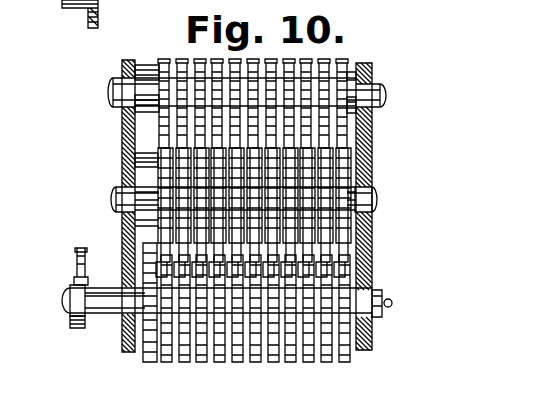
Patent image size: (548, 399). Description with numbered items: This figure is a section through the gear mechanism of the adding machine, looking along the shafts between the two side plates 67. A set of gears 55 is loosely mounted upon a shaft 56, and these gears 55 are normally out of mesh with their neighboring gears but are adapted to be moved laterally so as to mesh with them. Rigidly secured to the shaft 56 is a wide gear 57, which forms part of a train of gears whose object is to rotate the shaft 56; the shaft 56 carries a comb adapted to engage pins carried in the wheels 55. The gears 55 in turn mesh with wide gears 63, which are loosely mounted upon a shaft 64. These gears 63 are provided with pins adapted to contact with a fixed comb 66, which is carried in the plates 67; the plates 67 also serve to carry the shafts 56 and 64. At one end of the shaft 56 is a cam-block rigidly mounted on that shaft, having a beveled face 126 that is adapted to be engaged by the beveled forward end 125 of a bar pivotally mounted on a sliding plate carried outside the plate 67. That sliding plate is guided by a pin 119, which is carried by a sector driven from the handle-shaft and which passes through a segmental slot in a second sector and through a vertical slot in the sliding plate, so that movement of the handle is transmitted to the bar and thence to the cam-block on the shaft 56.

The pin 119 is at (113, 0).
The plates 67 is at (122, 121).
The fixed comb 66 is at (135, 159).
The shaft 64 is at (114, 199).
The wide gears 63 is at (374, 228).
The beveled face 126 is at (79, 268).
The beveled forward end 125 is at (75, 284).
The shaft 56 is at (105, 316).
The wide gear 57 is at (149, 355).
The gears 55 is at (259, 355).